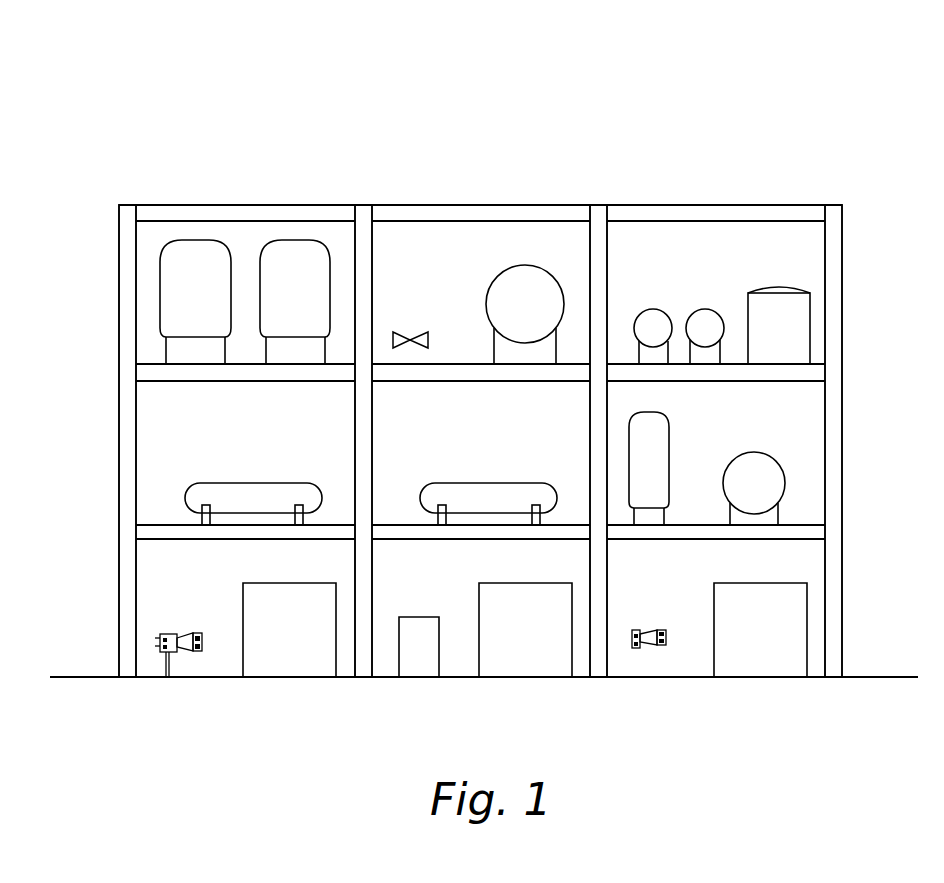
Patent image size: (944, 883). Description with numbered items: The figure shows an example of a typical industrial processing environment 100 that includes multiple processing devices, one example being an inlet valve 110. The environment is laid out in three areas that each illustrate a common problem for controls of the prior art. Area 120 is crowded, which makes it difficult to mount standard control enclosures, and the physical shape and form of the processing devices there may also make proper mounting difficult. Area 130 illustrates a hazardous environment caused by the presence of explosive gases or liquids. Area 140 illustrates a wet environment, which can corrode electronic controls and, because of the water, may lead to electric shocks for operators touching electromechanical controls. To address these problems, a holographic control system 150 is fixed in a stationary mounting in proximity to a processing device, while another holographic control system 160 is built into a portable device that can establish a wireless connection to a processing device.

The processing environment 100 is at (733, 42).
The inlet valve 110 is at (400, 333).
The area 120 is at (250, 213).
The area 130 is at (482, 213).
The area 140 is at (694, 213).
The holographic control system 150 is at (172, 633).
The holographic control system 160 is at (636, 630).